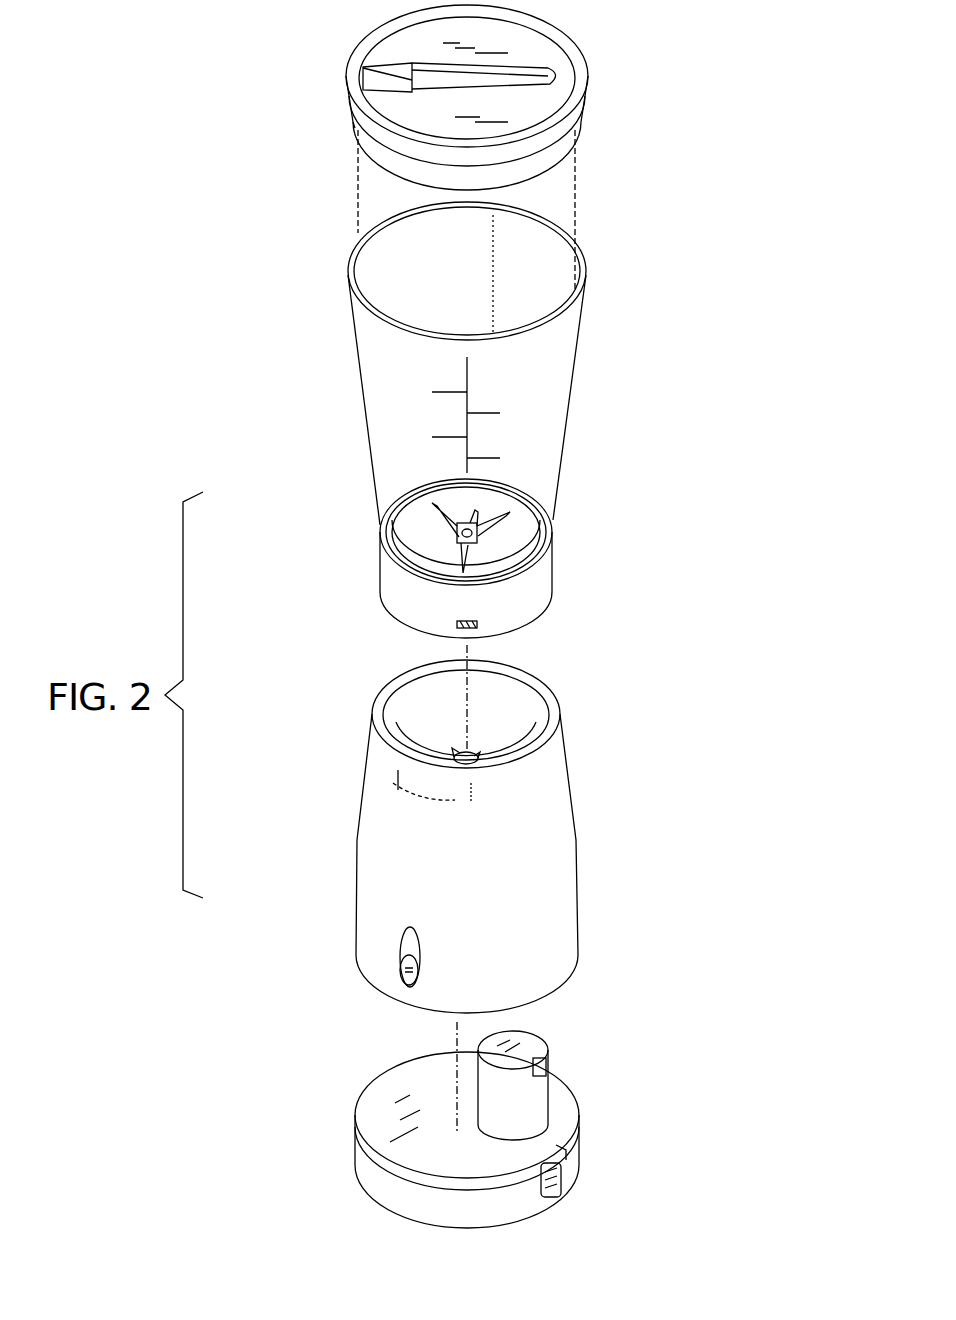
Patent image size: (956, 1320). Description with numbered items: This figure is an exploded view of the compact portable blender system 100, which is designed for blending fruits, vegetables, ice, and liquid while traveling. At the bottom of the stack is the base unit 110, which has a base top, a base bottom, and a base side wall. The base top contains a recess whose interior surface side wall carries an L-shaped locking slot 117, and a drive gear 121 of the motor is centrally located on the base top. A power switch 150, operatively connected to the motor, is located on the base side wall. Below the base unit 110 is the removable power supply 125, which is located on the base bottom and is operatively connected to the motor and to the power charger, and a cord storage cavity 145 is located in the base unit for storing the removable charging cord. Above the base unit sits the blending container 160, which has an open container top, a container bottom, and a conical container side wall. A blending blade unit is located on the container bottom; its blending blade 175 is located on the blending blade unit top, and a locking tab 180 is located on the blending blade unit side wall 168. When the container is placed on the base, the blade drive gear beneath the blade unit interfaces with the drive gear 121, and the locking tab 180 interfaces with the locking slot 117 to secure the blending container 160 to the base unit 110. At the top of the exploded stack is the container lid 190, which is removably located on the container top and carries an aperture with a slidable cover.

The compact portable blender system 100 is at (165, 62).
The container lid 190 is at (580, 100).
The blending container 160 is at (540, 413).
The blending blade 175 is at (437, 523).
The blending blade unit side wall 168 is at (532, 580).
The locking tab 180 is at (478, 624).
The base unit 110 is at (395, 872).
The locking slot 117 is at (392, 780).
The drive gear 121 is at (505, 755).
The power switch 150 is at (403, 982).
The cord storage cavity 145 is at (580, 1168).
The removable power supply 125 is at (523, 1095).